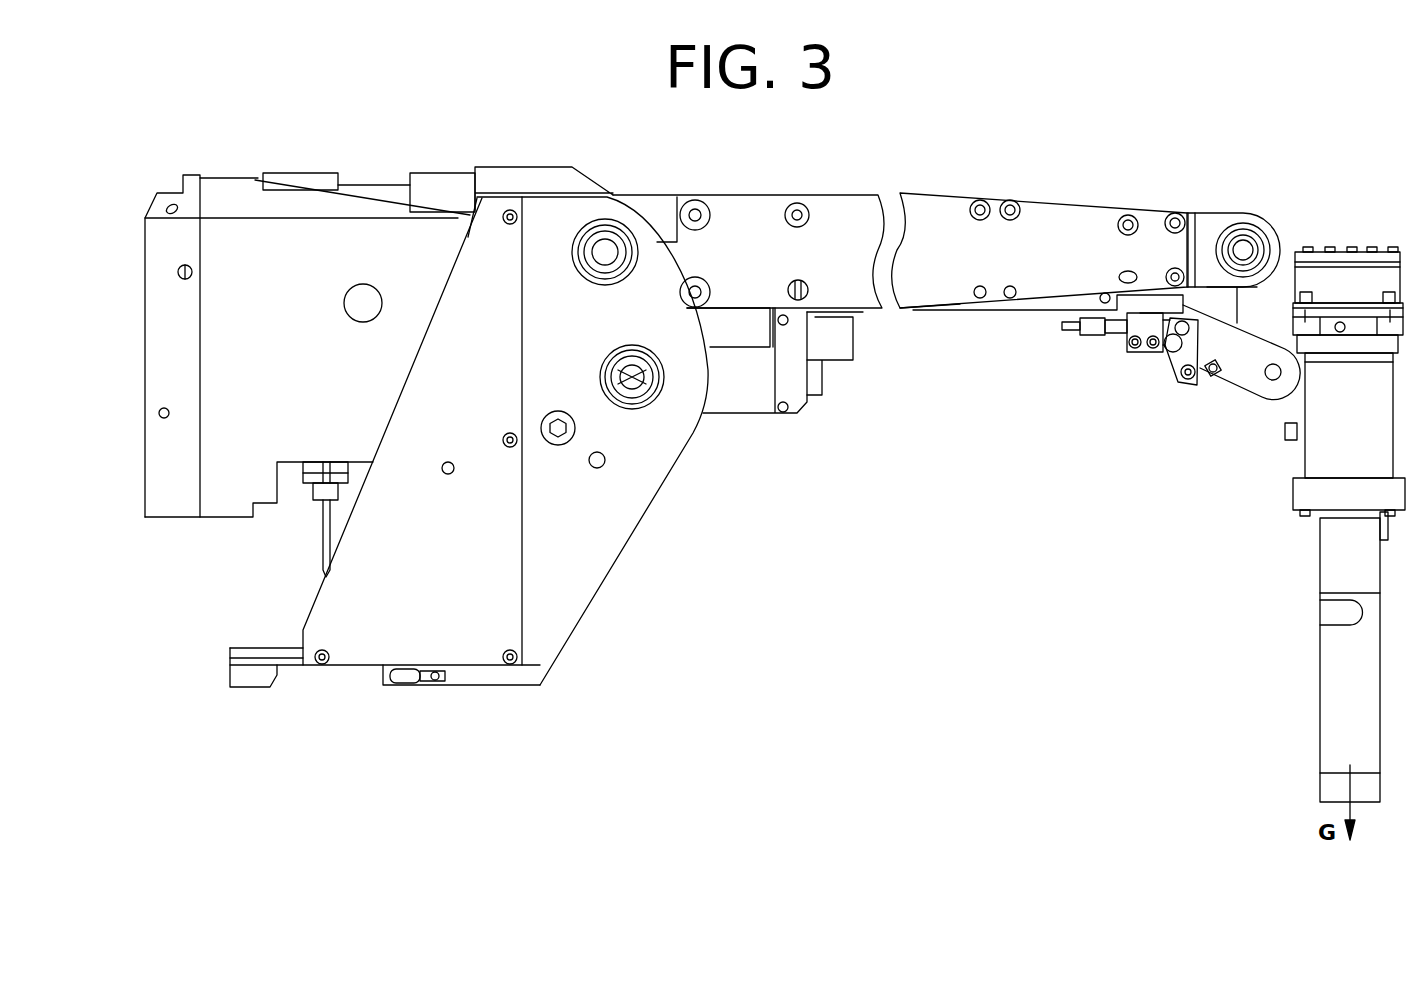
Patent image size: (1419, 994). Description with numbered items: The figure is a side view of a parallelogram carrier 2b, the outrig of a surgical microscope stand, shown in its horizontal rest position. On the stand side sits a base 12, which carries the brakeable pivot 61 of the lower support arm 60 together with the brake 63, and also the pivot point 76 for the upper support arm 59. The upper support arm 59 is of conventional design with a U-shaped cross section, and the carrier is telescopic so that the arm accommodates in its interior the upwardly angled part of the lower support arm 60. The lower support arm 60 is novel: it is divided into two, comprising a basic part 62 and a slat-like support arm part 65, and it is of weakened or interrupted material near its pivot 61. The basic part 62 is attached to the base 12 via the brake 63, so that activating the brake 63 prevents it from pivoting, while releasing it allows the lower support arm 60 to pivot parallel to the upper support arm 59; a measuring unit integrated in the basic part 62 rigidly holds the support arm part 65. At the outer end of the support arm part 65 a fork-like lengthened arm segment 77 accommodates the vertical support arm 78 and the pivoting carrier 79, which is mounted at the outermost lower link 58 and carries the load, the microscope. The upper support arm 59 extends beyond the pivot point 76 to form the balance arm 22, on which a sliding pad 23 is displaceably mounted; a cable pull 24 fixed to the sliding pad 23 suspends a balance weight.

The base 12 is at (618, 520).
The balance arm 22 is at (388, 192).
The sliding pad 23 is at (310, 180).
The cable pull 24 is at (325, 528).
The parallelogram carrier 2b is at (843, 172).
The outermost lower link 58 is at (1270, 378).
The upper support arm 59 is at (948, 207).
The lower support arm 60 is at (915, 313).
The pivot 61 is at (643, 387).
The basic part 62 is at (792, 375).
The brake 63 is at (663, 375).
The support arm part 65 is at (1035, 305).
The pivot point 76 is at (607, 248).
The lengthened arm segment 77 is at (1200, 350).
The vertical support arm 78 is at (1272, 302).
The pivoting carrier 79 is at (1322, 398).